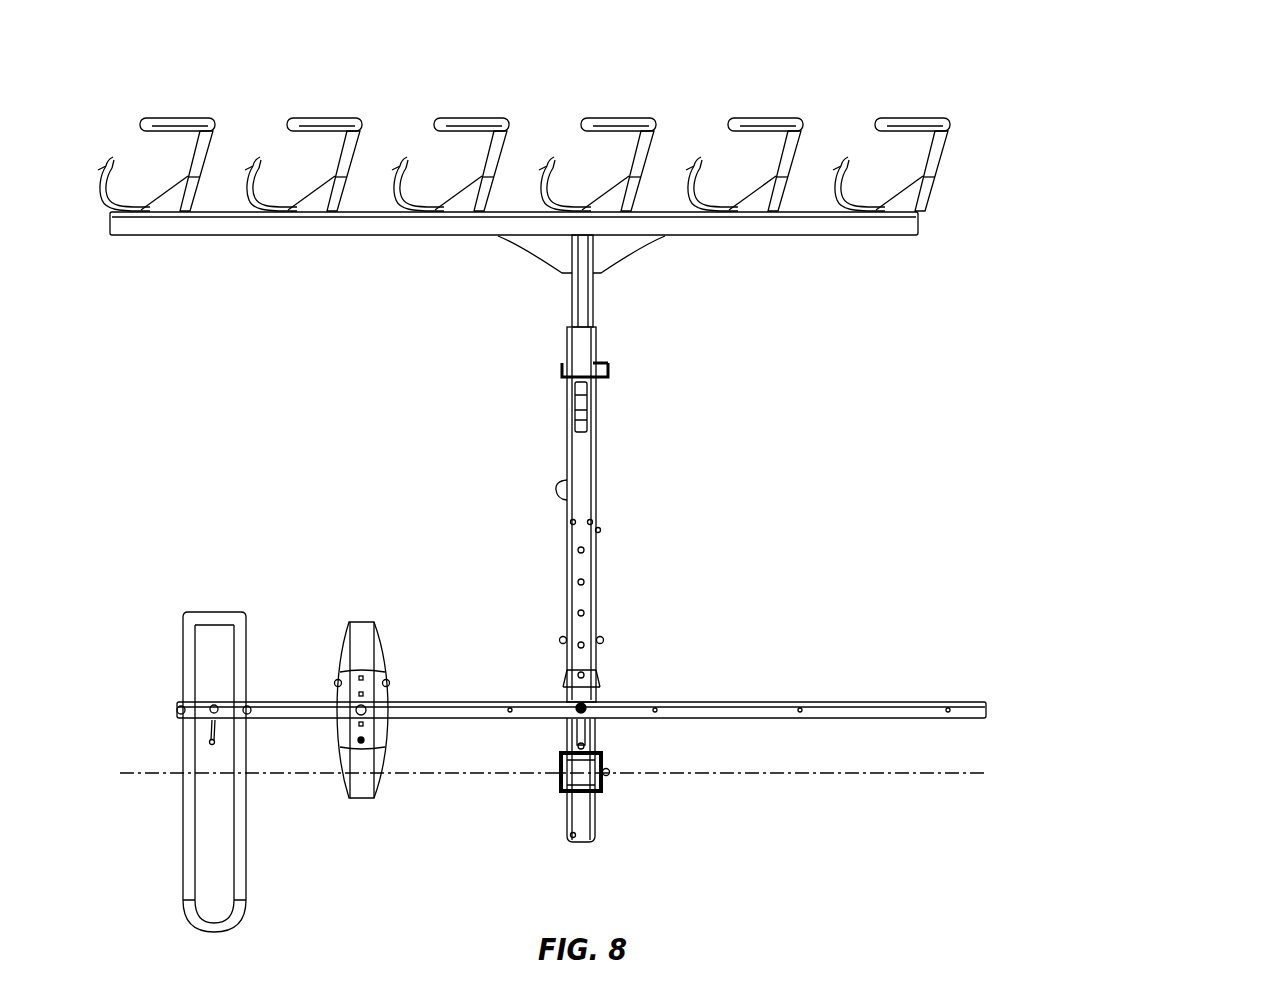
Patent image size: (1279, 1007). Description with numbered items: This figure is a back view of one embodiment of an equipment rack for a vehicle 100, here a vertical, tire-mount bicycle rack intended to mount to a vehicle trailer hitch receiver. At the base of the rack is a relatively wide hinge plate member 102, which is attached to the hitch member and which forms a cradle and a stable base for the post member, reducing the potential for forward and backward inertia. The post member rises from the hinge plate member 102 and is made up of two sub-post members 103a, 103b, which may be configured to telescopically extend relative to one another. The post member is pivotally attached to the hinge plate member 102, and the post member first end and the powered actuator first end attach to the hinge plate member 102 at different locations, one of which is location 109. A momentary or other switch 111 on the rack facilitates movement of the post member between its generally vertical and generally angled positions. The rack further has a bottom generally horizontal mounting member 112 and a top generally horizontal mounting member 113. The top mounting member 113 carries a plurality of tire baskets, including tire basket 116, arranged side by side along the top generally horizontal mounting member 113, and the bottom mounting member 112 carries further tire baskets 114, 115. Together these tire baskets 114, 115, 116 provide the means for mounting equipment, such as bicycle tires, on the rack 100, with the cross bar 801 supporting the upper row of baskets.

The equipment rack for a vehicle 100 is at (1188, 90).
The top generally horizontal mounting member 113 is at (950, 97).
The tire basket 116 is at (138, 126).
The cross bar 801 is at (860, 228).
The sub-post member 103b is at (585, 294).
The sub-post member 103a is at (585, 483).
The switch 111 is at (560, 493).
The bottom generally horizontal mounting member 112 is at (925, 702).
The tire basket 115 is at (216, 622).
The tire basket 114 is at (362, 645).
The hinge plate member 102 is at (563, 805).
The attachment location 109 is at (606, 782).